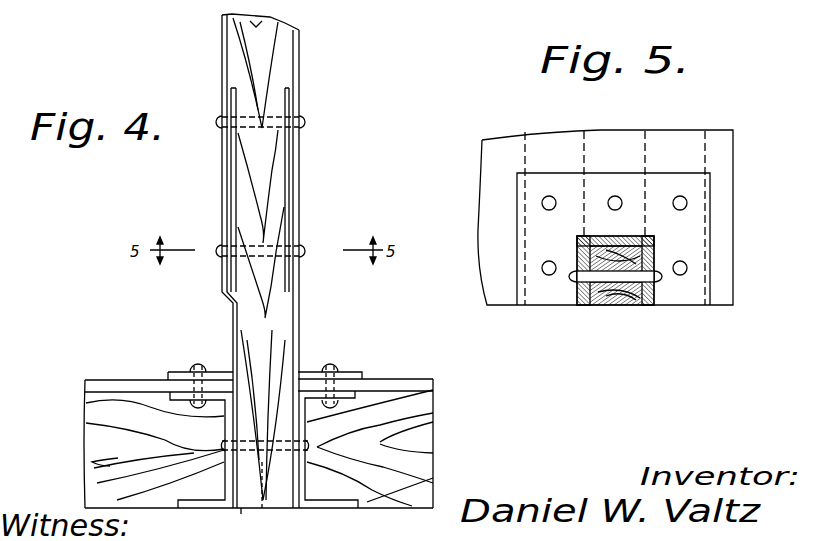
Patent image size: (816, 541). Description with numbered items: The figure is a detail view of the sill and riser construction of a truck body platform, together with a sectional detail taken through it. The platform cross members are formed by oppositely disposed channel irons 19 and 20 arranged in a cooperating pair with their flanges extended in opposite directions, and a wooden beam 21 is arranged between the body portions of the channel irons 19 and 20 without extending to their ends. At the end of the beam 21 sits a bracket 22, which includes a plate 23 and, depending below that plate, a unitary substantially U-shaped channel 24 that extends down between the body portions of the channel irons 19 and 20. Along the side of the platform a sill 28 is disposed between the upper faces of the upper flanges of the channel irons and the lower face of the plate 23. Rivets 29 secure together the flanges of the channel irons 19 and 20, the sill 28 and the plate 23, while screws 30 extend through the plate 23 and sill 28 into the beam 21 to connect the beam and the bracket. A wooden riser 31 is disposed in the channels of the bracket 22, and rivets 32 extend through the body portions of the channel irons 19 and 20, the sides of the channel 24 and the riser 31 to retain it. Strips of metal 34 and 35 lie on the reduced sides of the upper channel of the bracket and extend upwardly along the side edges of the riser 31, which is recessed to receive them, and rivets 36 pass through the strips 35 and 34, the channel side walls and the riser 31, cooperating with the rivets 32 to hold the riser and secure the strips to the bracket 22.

In FIG. 4, the channel iron 19 is at (217, 509).
In FIG. 5, the channel iron 19 is at (541, 146).
In FIG. 5, the channel iron 20 is at (680, 146).
In FIG. 4, the beam 21 is at (310, 372).
In FIG. 5, the beam 21 is at (600, 146).
In FIG. 4, the bracket 22 is at (306, 331).
In FIG. 5, the bracket 22 is at (612, 236).
In FIG. 5, the plate 23 is at (672, 180).
In FIG. 4, the U-shaped channel 24 is at (241, 512).
In FIG. 4, the sill 28 is at (110, 385).
In FIG. 5, the sill 28 is at (494, 146).
In FIG. 4, the rivet 29 is at (198, 366).
In FIG. 5, the rivet 29 is at (552, 212).
In FIG. 5, the screw 30 is at (620, 196).
In FIG. 4, the riser 31 is at (272, 192).
In FIG. 5, the riser 31 is at (634, 306).
In FIG. 4, the rivet 32 is at (262, 510).
In FIG. 4, the strip of metal 34 is at (298, 70).
In FIG. 5, the strip of metal 34 is at (668, 305).
In FIG. 4, the strip of metal 35 is at (226, 60).
In FIG. 5, the strip of metal 35 is at (585, 305).
In FIG. 4, the rivet 36 is at (220, 122).
In FIG. 5, the rivet 36 is at (578, 283).